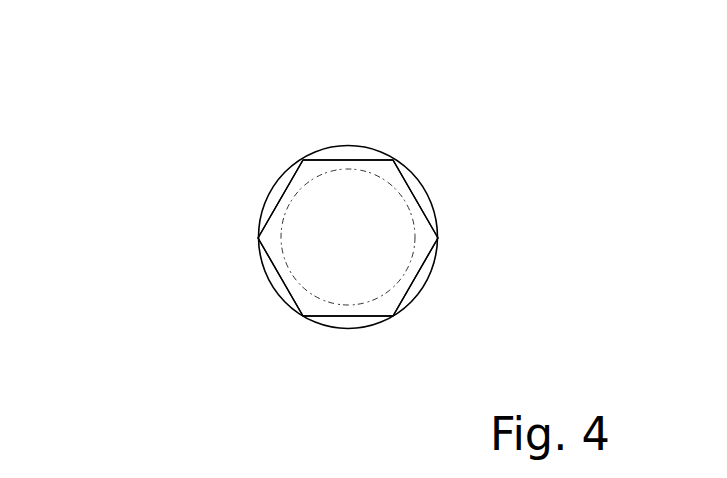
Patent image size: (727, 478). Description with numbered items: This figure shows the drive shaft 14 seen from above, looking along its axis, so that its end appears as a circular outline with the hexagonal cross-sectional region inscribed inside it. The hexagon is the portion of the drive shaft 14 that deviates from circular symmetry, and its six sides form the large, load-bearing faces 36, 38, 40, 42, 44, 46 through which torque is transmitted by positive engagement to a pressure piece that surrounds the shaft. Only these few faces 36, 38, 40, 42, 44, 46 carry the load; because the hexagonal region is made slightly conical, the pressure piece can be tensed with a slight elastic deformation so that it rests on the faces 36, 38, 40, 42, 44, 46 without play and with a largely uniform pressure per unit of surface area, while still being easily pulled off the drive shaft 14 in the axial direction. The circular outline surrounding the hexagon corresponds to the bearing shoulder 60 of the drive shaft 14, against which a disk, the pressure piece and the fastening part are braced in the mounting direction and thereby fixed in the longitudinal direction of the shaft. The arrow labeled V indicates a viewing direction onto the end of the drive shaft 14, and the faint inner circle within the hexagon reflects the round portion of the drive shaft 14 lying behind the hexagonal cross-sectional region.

The drive shaft 14 is at (428, 177).
The load-bearing face 36 is at (282, 282).
The load-bearing face 38 is at (276, 207).
The load-bearing face 40 is at (294, 106).
The load-bearing face 42 is at (420, 207).
The load-bearing face 44 is at (411, 284).
The load-bearing face 46 is at (342, 317).
The bearing shoulder 60 is at (266, 184).
The viewing direction V is at (298, 326).